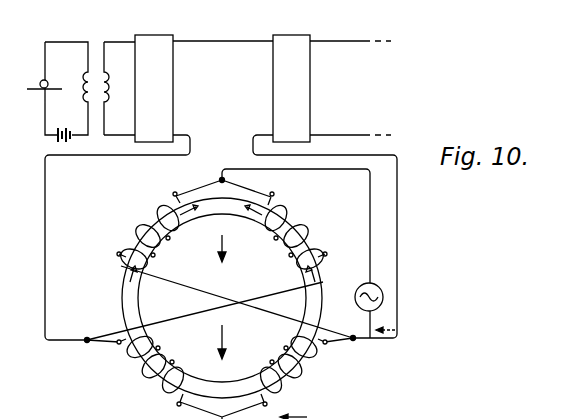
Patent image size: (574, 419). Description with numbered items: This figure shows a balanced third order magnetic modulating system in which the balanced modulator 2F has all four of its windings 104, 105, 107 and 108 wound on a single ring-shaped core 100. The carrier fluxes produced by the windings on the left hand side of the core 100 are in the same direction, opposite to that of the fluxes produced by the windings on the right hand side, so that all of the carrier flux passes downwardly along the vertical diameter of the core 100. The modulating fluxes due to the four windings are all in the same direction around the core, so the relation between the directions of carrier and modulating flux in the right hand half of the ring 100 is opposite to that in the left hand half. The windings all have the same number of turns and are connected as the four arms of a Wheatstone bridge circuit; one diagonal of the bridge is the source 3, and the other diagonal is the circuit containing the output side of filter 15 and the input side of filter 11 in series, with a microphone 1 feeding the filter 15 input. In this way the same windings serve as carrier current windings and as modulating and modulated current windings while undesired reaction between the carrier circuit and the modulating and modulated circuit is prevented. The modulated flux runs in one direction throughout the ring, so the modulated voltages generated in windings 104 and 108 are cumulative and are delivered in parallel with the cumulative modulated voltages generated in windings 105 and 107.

The microphone 1 is at (47, 80).
The filter 15 is at (174, 91).
The filter 11 is at (300, 91).
The ring-shaped core 100 is at (313, 312).
The winding 105 is at (160, 248).
The winding 107 is at (292, 258).
The winding 104 is at (166, 356).
The winding 108 is at (281, 354).
The balanced modulator 2F is at (216, 309).
The source 3 is at (372, 283).